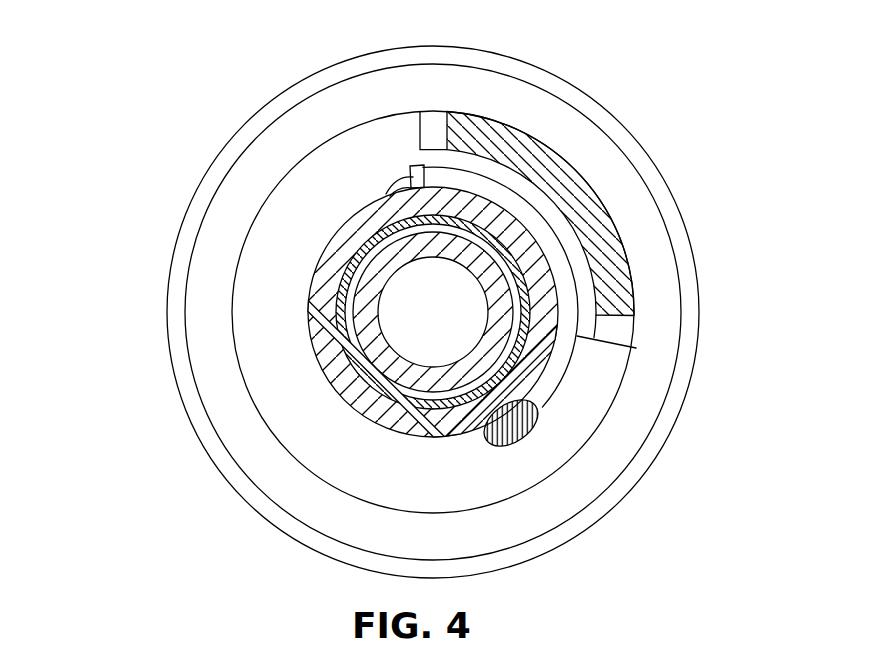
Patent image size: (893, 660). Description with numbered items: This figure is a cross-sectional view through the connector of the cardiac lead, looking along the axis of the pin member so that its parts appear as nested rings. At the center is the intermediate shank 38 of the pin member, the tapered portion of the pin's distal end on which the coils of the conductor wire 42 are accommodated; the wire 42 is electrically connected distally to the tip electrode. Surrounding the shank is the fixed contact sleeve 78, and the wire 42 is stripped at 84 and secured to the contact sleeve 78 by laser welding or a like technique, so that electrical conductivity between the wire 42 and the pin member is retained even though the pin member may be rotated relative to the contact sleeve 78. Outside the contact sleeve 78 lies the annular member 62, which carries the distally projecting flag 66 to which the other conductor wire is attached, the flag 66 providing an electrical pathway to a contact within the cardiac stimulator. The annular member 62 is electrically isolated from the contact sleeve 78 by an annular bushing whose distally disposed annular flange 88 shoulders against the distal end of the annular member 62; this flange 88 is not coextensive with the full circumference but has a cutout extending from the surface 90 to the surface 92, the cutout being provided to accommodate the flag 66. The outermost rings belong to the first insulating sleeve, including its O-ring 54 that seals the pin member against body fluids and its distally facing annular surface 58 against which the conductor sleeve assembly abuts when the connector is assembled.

The intermediate shank 38 is at (356, 284).
The conductor wire 42 is at (585, 375).
The O-ring 54 is at (608, 127).
The distally facing annular surface 58 is at (238, 158).
The annular member 62 is at (620, 329).
The flag 66 is at (611, 214).
The contact sleeve 78 is at (317, 358).
The stripped portion of wire 84 is at (395, 182).
The annular flange 88 is at (320, 460).
The surface 90 is at (422, 128).
The surface 92 is at (622, 340).